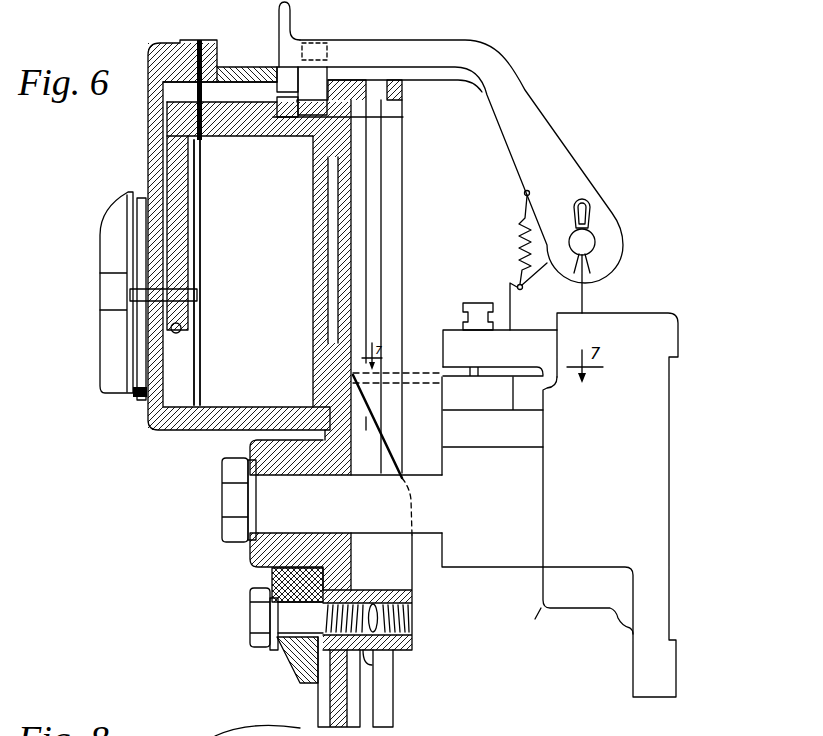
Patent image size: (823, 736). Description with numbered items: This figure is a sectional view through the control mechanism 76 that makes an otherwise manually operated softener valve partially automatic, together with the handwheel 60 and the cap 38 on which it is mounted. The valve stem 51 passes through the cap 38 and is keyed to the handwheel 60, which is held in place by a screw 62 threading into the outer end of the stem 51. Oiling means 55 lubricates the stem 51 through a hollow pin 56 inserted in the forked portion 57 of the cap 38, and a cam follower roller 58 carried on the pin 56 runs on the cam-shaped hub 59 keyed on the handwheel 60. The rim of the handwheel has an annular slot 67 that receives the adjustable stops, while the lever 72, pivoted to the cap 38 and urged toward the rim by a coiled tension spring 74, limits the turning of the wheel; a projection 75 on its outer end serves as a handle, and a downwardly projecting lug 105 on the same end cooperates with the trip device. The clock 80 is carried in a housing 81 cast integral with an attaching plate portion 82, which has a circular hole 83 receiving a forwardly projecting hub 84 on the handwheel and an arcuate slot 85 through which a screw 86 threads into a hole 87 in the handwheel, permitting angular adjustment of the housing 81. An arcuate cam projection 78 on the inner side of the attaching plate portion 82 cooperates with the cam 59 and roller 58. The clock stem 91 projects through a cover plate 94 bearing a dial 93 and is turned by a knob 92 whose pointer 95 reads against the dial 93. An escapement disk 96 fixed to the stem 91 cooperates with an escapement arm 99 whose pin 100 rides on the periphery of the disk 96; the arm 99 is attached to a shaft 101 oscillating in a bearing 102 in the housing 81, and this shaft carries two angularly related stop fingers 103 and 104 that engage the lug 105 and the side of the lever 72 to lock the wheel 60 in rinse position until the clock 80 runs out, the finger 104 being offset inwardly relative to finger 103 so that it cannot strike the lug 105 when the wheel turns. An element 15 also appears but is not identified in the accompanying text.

The housing body 15 is at (623, 616).
The cap 38 is at (539, 610).
The stem 51 is at (386, 470).
The oiling means 55 is at (476, 302).
The hollow pin 56 is at (486, 367).
The forked portion 57 is at (500, 349).
The cam follower roller 58 is at (473, 418).
The cam-shaped hub 59 is at (387, 430).
The handwheel 60 is at (330, 706).
The screw 62 is at (227, 503).
The annular slot 67 is at (383, 270).
The lever 72 is at (550, 115).
The coiled tension spring 74 is at (518, 243).
The projection 75 is at (292, 13).
The control mechanism 76 is at (234, 60).
The arcuate cam projection 78 is at (417, 371).
The clock 80 is at (287, 245).
The housing 81 is at (328, 179).
The attaching plate portion 82 is at (292, 652).
The circular hole 83 is at (272, 580).
The hub 84 is at (240, 463).
The arcuate slot 85 is at (272, 647).
The screw 86 is at (252, 622).
The hole 87 is at (385, 665).
The stem 91 is at (198, 295).
The knob 92 is at (103, 355).
The dial 93 is at (135, 396).
The cover plate 94 is at (148, 160).
The pointer 95 is at (112, 214).
The escapement disk 96 is at (201, 242).
The escapement arm 99 is at (190, 182).
The pin 100 is at (178, 334).
The shaft 101 is at (226, 104).
The bearing 102 is at (263, 137).
The stop finger 103 is at (366, 118).
The stop finger 104 is at (329, 52).
The lug 105 is at (302, 92).